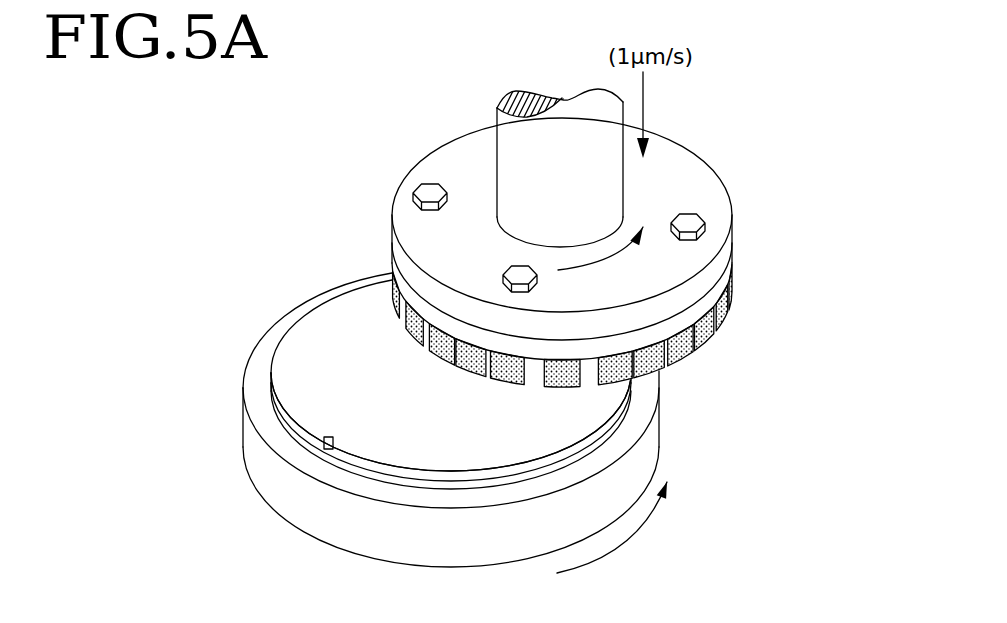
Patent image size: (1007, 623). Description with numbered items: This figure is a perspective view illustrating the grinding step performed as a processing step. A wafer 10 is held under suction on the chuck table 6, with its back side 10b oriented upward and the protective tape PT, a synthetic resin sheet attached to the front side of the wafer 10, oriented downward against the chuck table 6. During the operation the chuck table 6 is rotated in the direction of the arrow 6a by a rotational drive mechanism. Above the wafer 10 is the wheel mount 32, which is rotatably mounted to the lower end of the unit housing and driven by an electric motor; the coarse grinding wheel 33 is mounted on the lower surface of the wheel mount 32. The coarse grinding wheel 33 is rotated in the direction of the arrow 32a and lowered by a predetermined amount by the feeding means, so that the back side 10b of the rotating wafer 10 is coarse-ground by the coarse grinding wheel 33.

The chuck table 6 is at (267, 505).
The arrow 6a is at (625, 547).
The wafer 10 is at (350, 278).
The back side 10b is at (325, 320).
The protective tape PT is at (413, 487).
The wheel mount 32 is at (692, 183).
The arrow 32a is at (620, 258).
The coarse grinding wheel 33 is at (717, 290).